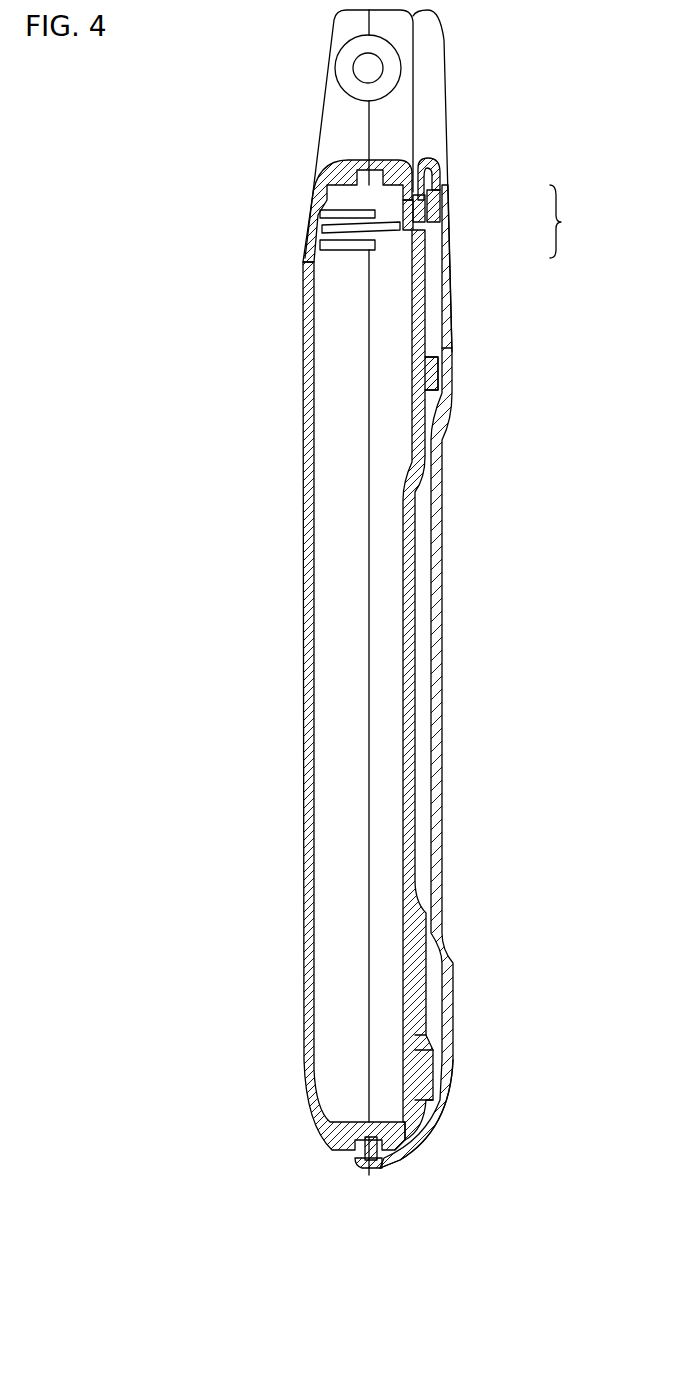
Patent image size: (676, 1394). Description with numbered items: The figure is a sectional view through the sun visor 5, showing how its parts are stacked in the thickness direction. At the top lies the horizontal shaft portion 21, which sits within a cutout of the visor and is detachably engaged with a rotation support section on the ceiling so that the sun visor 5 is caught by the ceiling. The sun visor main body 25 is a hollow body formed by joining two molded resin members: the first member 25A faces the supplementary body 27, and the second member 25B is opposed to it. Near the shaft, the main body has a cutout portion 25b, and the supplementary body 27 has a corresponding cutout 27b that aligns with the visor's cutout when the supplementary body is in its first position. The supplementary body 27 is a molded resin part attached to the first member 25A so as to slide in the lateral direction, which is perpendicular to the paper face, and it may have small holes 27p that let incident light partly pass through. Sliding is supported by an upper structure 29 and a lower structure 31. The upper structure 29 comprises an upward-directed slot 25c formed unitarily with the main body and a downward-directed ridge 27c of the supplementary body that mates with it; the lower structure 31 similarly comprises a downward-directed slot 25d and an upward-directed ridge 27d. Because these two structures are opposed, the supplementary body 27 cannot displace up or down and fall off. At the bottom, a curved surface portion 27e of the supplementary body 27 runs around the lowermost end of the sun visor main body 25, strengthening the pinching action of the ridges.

The sun visor 5 is at (556, 314).
The horizontal shaft portion 21 is at (338, 66).
The sun visor main body 25 is at (359, 646).
The cutout portion 25b is at (348, 150).
The slot 25c is at (425, 210).
The second member 25B is at (305, 497).
The first member 25A is at (420, 532).
The slot 25d is at (385, 1177).
The supplementary body 27 is at (485, 663).
The cutout 27b is at (432, 158).
The ridge 27c is at (437, 196).
The small holes 27p is at (450, 362).
The curved surface portion 27e is at (410, 1150).
The ridge 27d is at (345, 1162).
The upper structure 29 is at (572, 221).
The lower structure 31 is at (355, 1197).